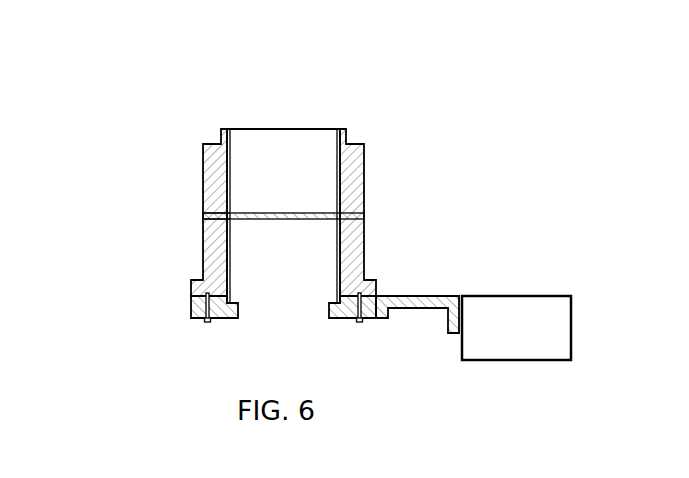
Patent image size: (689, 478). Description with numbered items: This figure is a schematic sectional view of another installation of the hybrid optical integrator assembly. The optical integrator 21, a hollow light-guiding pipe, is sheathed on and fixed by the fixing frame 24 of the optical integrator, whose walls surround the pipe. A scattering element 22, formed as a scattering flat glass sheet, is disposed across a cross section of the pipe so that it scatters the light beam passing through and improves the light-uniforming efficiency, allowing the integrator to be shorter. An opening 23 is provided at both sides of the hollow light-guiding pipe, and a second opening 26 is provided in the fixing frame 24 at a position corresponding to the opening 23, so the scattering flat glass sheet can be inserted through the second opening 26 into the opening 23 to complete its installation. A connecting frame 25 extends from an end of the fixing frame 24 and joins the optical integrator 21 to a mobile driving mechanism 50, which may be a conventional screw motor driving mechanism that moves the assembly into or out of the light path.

The optical integrator 21 is at (203, 245).
The scattering element 22 is at (300, 213).
The opening 23 is at (203, 213).
The fixing frame of the optical integrator 24 is at (203, 178).
The connecting frame 25 is at (430, 297).
The second opening 26 is at (203, 218).
The mobile driving mechanism 50 is at (517, 360).